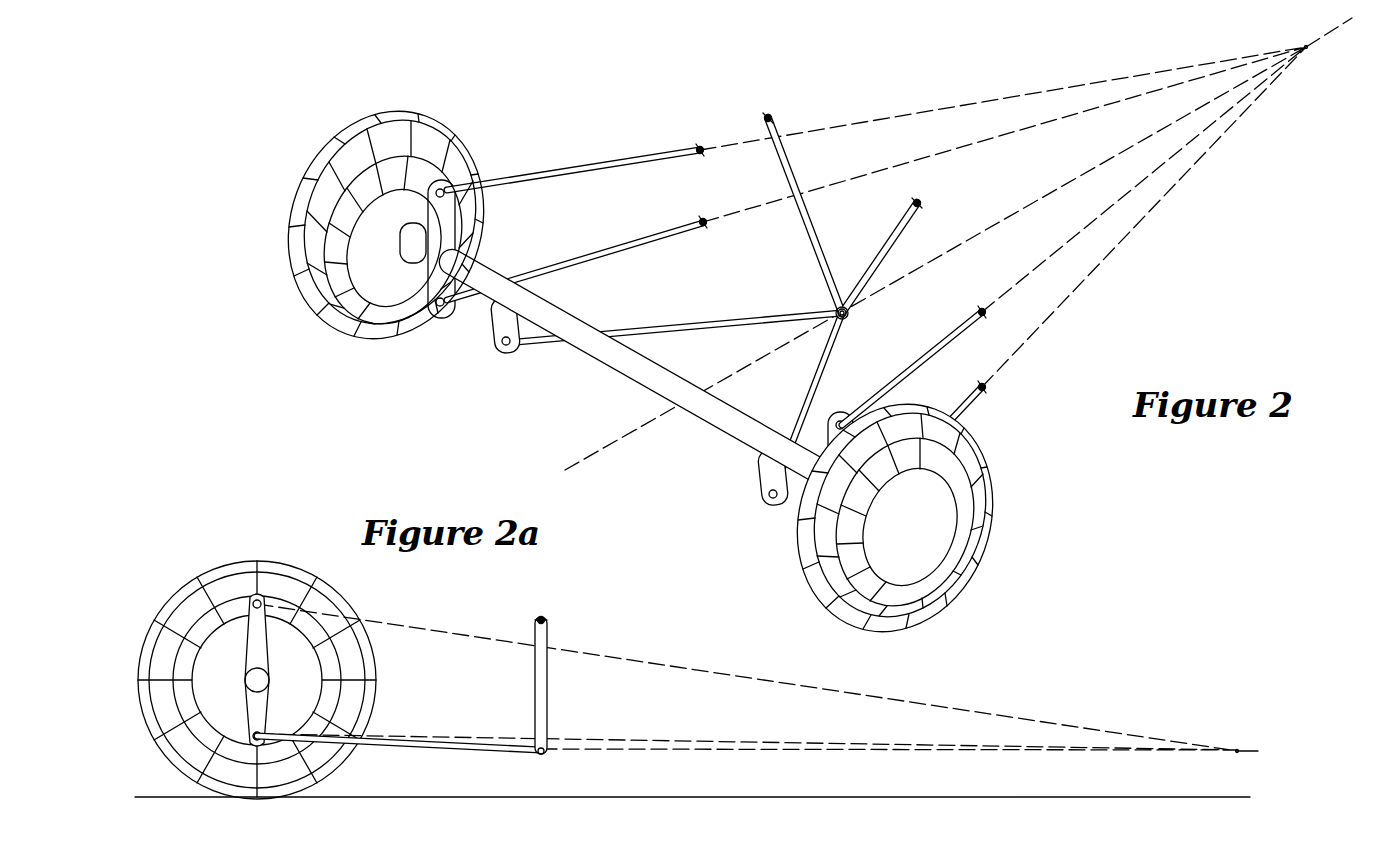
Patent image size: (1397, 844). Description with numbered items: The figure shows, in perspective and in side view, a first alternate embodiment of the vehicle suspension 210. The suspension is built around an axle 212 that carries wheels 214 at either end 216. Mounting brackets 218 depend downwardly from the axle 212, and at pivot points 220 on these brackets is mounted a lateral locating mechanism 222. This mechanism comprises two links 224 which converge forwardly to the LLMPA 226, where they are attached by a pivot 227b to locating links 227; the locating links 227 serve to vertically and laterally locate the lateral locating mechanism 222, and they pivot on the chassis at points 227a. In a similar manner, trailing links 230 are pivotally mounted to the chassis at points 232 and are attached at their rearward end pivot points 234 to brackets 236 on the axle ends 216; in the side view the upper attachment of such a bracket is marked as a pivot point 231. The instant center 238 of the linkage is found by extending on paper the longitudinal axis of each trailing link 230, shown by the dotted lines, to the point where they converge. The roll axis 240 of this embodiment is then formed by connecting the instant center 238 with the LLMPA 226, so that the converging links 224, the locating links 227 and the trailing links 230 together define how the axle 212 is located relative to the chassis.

In FIG. 2, the suspension 210 is at (1130, 292).
In FIG. 2A, the suspension 210 is at (405, 645).
In FIG. 2, the axle 212 is at (600, 350).
In FIG. 2A, the axle 212 is at (258, 680).
In FIG. 2, the wheels 214 is at (407, 113).
In FIG. 2A, the wheels 214 is at (277, 585).
In FIG. 2, the axle end 216 is at (415, 245).
In FIG. 2, the mounting brackets 218 is at (495, 322).
In FIG. 2, the pivot points 220 is at (503, 347).
In FIG. 2, the lateral locating mechanism 222 is at (730, 300).
In FIG. 2, the links 224 is at (818, 371).
In FIG. 2A, the links 224 is at (430, 742).
In FIG. 2, the LLMPA 226 is at (848, 315).
In FIG. 2A, the LLMPA 226 is at (548, 755).
In FIG. 2, the locating links 227 is at (890, 242).
In FIG. 2A, the locating links 227 is at (548, 689).
In FIG. 2, the points 227a is at (770, 117).
In FIG. 2A, the points 227a is at (546, 620).
In FIG. 2, the pivot 227b is at (838, 312).
In FIG. 2, the trailing links 230 is at (560, 265).
In FIG. 2A, the pivot point 231 is at (255, 600).
In FIG. 2, the points 232 is at (703, 221).
In FIG. 2, the pivot points 234 is at (449, 190).
In FIG. 2, the brackets 236 is at (452, 225).
In FIG. 2A, the brackets 236 is at (268, 652).
In FIG. 2, the instant center 238 is at (1304, 56).
In FIG. 2A, the instant center 238 is at (1238, 751).
In FIG. 2, the roll axis 240 is at (1100, 168).
In FIG. 2A, the roll axis 240 is at (660, 750).